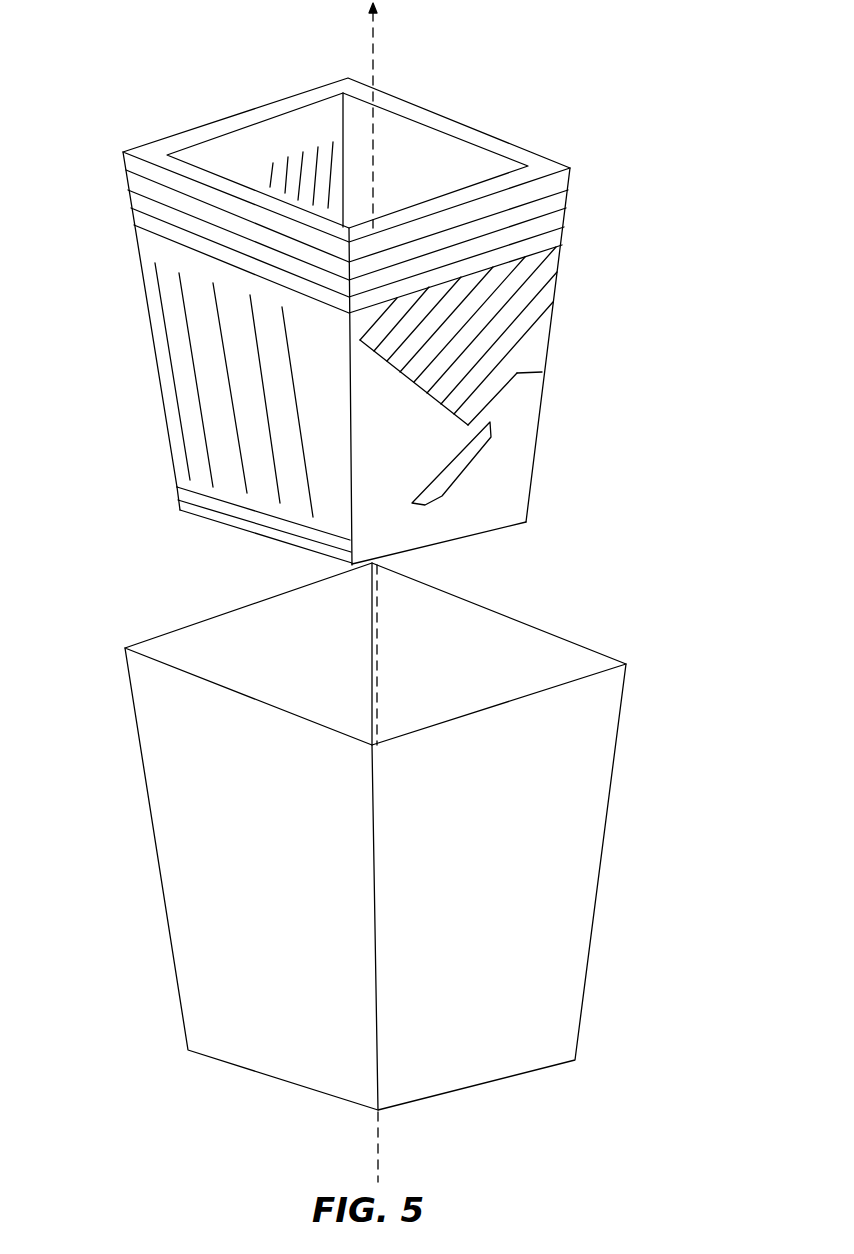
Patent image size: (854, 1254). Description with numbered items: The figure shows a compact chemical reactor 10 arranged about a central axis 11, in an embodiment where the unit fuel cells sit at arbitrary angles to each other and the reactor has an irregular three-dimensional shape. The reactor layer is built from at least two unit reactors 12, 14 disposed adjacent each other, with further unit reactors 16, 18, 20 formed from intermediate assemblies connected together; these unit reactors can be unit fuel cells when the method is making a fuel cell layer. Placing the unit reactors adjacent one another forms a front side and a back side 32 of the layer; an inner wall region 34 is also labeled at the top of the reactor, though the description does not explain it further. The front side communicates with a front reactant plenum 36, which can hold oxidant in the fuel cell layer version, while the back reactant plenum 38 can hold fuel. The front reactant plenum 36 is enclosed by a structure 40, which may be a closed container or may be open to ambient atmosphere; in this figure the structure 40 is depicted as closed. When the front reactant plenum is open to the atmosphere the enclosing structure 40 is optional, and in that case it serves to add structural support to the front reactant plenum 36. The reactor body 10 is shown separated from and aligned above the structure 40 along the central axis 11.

The compact chemical reactor 10 is at (556, 541).
The central axis 11 is at (372, 62).
The unit reactor 12 is at (540, 222).
The unit reactor 14 is at (517, 373).
The unit reactor 16 is at (478, 445).
The unit reactor 18 is at (185, 380).
The unit reactor 20 is at (177, 489).
The back side 32 is at (133, 224).
The inner wall 34 is at (313, 143).
The front reactant plenum 36 is at (487, 648).
The back reactant plenum 38 is at (425, 157).
The structure 40 is at (613, 788).